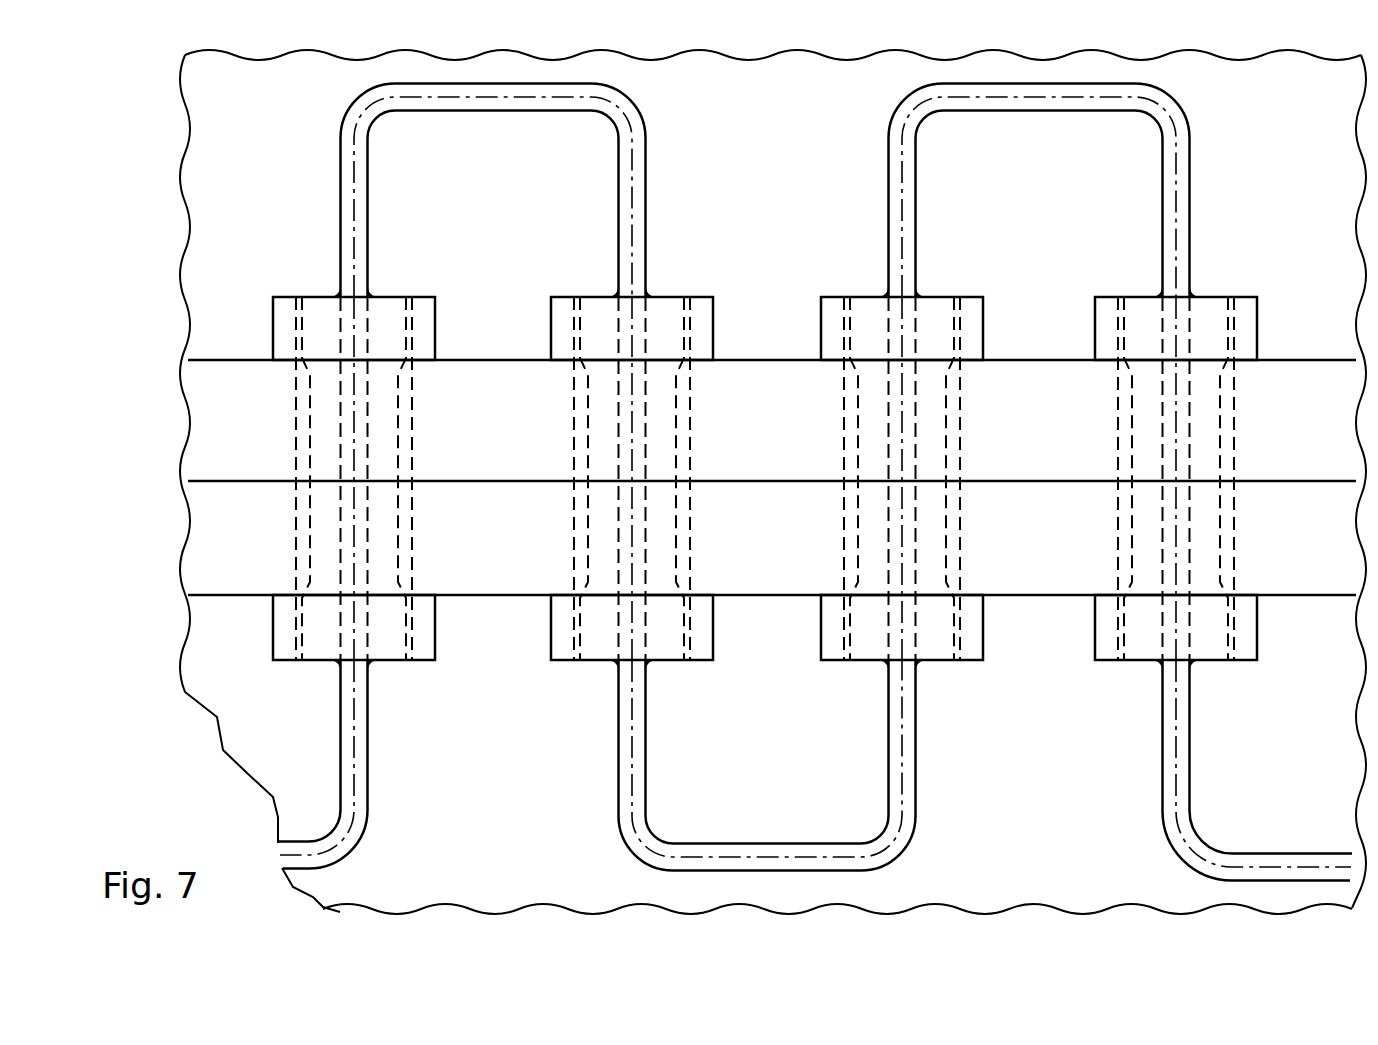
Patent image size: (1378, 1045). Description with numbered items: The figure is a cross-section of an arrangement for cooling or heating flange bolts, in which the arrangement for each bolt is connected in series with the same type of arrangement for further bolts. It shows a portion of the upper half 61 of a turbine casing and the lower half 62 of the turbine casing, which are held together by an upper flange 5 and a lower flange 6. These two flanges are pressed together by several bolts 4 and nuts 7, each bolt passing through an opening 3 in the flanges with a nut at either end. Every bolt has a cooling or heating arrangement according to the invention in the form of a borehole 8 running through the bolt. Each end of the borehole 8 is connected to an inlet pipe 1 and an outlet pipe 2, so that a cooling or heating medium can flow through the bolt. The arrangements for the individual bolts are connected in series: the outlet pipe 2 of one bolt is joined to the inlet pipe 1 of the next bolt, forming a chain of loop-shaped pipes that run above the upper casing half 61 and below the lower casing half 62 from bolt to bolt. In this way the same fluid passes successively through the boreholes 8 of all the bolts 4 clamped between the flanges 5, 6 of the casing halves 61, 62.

The inlet pipe 1 is at (635, 187).
The outlet pipe 2 is at (357, 186).
The through-hole in layers 3 is at (383, 540).
The bolt 4 is at (423, 320).
The upper flange 5 is at (775, 434).
The lower flange 6 is at (775, 554).
The nut 7 is at (423, 633).
The borehole 8 is at (360, 421).
The upper half of casing 61 is at (812, 128).
The lower half of casing 62 is at (1075, 872).